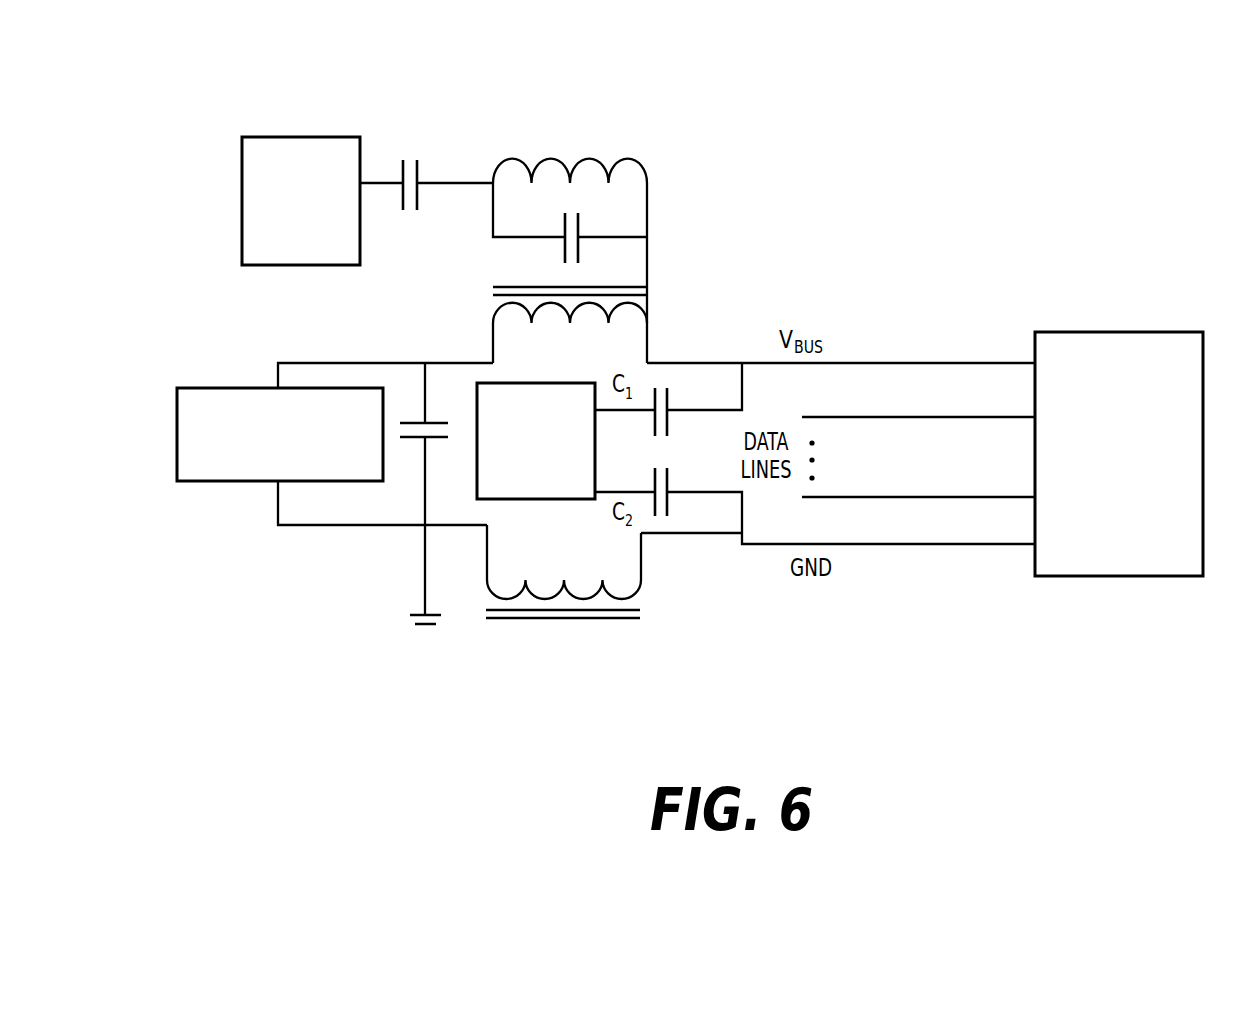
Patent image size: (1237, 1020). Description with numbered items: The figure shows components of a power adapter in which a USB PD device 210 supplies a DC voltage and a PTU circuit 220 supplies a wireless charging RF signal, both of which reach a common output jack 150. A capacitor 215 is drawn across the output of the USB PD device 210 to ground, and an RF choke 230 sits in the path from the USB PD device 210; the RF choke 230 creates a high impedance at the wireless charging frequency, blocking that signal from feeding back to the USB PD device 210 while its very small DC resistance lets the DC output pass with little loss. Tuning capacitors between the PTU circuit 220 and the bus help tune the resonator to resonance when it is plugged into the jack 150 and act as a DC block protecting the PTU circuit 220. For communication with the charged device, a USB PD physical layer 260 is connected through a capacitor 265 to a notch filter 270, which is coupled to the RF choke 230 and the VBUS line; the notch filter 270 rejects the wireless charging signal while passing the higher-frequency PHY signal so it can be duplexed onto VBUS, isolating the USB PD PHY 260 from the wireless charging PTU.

The jack 150 is at (1174, 332).
The USB PD device 210 is at (202, 482).
The capacitor 215 is at (403, 472).
The PTU circuit 220 is at (567, 499).
The RF choke 230 is at (582, 684).
The USB PD physical layer (PHY) 260 is at (278, 137).
The capacitor 265 is at (442, 165).
The notch filter 270 is at (578, 140).